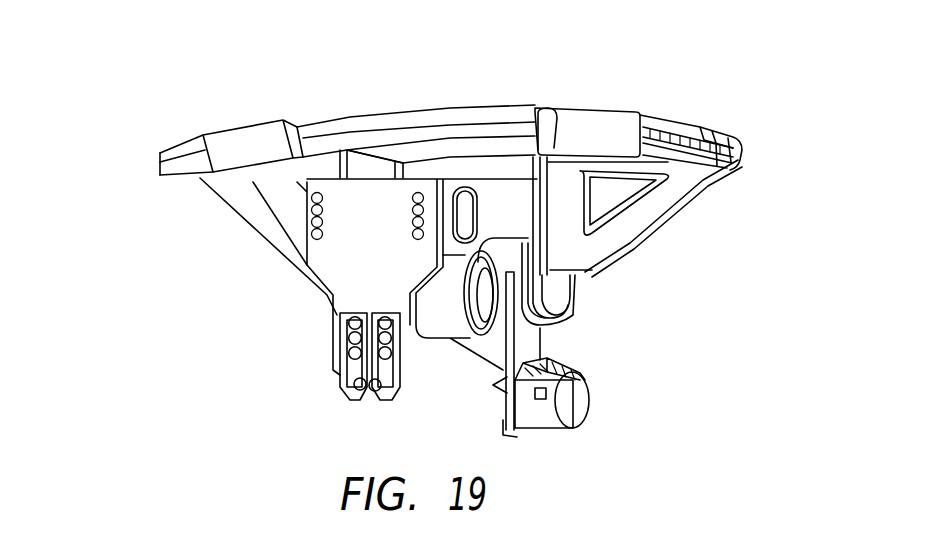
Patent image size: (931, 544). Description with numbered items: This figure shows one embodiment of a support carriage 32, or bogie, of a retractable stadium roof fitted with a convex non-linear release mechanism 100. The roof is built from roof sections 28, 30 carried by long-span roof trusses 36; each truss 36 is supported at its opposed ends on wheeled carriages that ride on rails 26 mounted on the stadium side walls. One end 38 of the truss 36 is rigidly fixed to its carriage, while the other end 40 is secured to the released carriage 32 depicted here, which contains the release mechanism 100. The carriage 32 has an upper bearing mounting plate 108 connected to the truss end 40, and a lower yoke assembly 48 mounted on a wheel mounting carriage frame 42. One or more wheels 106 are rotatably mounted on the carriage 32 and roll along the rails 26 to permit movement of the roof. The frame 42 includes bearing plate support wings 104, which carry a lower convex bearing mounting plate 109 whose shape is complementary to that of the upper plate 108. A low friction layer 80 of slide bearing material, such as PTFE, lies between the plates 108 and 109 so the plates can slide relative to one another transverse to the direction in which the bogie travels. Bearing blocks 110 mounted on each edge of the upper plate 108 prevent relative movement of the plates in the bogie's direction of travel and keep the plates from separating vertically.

The convex non-linear release mechanism 100 is at (150, 163).
The rails 26 is at (348, 270).
The roof section 28 is at (223, 203).
The roof section 30 is at (683, 233).
The support carriage 32 is at (242, 298).
The roof truss 36 is at (743, 151).
The end of truss 38 is at (721, 128).
The end of truss 40 is at (548, 107).
The wheel mounting carriage frame 42 is at (510, 198).
The lower yoke assembly 48 is at (637, 262).
The low friction layer of slide bearing material 80 is at (700, 128).
The bearing plate support wings 104 is at (265, 208).
The wheels 106 is at (427, 357).
The upper bearing mounting plate 108 is at (651, 118).
The lower convex bearing mounting plate 109 is at (741, 168).
The bearing blocks 110 is at (593, 107).